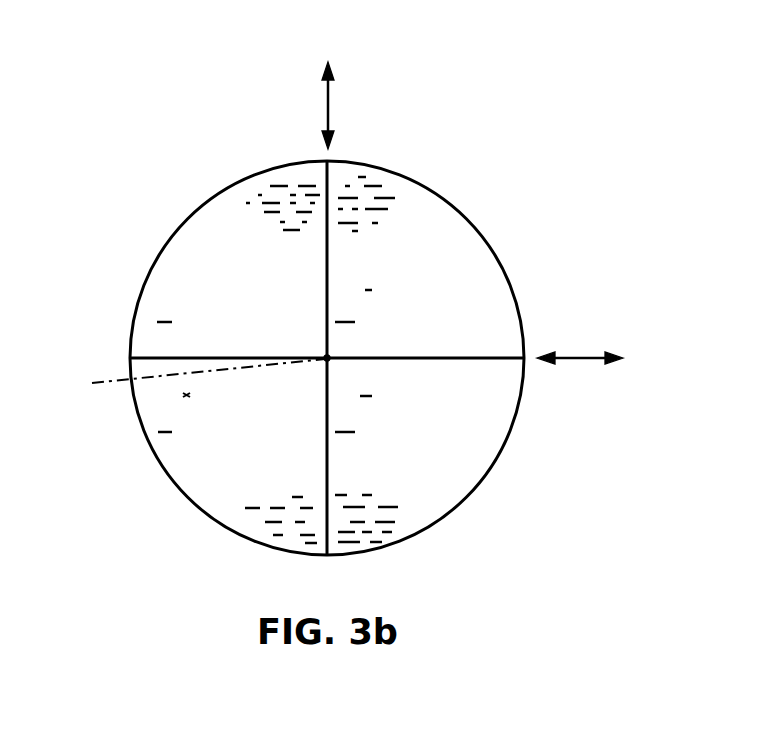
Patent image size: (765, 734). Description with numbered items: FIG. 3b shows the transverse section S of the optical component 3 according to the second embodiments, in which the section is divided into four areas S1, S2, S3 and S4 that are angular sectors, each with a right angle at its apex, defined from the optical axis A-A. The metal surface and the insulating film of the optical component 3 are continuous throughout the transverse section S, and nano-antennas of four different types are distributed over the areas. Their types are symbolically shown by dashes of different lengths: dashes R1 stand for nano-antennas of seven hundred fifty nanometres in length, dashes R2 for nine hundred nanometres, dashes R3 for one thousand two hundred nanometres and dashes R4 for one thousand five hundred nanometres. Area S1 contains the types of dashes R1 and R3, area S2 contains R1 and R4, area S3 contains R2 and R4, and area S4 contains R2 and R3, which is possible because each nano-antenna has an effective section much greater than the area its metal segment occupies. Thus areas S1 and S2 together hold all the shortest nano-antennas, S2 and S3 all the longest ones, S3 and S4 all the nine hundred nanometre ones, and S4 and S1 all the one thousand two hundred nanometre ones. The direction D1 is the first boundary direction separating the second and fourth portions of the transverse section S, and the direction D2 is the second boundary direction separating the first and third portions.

The optical component 3 is at (511, 284).
The transverse section S is at (474, 224).
The first boundary direction D1 is at (330, 105).
The second boundary direction D2 is at (578, 357).
The optical axis A-A is at (185, 378).
The area S1 is at (268, 252).
The area S2 is at (434, 252).
The area S3 is at (421, 488).
The area S4 is at (268, 488).
The dashes R1 is at (306, 178).
The dashes R2 is at (185, 396).
The dashes R3 is at (288, 186).
The dashes R4 is at (386, 197).